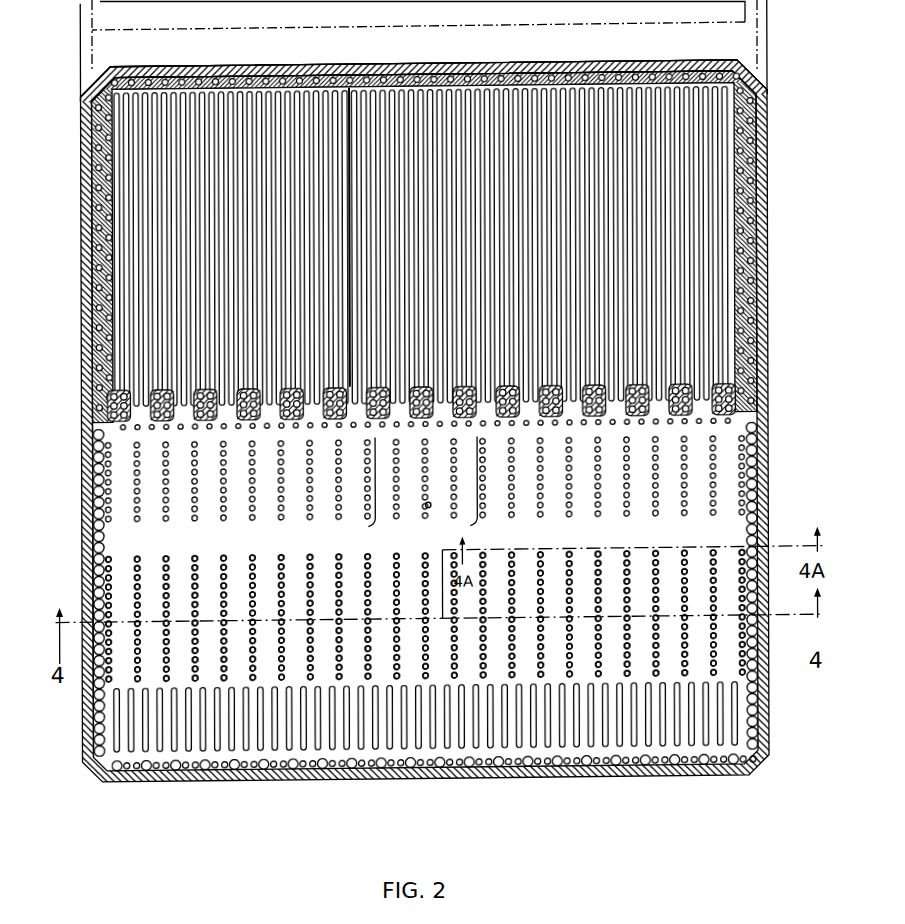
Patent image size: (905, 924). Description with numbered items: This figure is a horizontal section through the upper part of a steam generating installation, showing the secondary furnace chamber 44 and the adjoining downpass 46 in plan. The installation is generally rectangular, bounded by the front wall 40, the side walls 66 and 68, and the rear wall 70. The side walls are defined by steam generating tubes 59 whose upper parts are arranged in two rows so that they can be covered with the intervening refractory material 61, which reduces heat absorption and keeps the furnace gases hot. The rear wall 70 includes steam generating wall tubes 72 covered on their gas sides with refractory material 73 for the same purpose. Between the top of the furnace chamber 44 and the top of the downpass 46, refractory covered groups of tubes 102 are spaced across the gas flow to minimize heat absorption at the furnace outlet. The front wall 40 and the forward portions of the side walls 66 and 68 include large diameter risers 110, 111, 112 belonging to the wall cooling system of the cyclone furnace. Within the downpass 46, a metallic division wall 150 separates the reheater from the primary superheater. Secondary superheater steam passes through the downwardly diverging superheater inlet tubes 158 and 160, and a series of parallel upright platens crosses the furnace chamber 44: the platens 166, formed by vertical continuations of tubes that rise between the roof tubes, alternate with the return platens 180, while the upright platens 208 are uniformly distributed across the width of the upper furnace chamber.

The front wall 40 is at (470, 781).
The secondary furnace chamber 44 is at (145, 540).
The downpass 46 is at (428, 503).
The steam generating tubes 59 is at (90, 200).
The refractory material 61 is at (92, 264).
The side wall 66 is at (84, 298).
The side wall 68 is at (759, 349).
The rear wall 70 is at (496, 63).
The steam generating wall tubes 72 is at (270, 76).
The refractory material 73 is at (309, 76).
The refractory covered groups of tubes 102 is at (92, 425).
The large diameter riser 110 is at (92, 709).
The large diameter riser 111 is at (318, 768).
The large diameter riser 112 is at (771, 648).
The metallic division wall 150 is at (352, 118).
The superheater inlet tubes 158 is at (223, 429).
The superheater inlet tubes 160 is at (232, 746).
The platens 166 is at (378, 478).
The platens 180 is at (453, 517).
The upright platens 208 is at (310, 558).